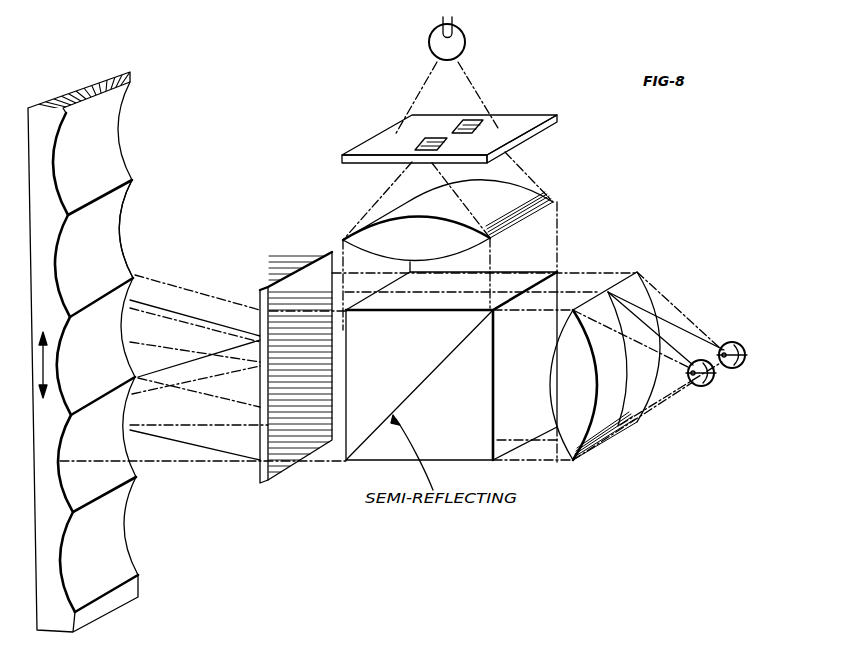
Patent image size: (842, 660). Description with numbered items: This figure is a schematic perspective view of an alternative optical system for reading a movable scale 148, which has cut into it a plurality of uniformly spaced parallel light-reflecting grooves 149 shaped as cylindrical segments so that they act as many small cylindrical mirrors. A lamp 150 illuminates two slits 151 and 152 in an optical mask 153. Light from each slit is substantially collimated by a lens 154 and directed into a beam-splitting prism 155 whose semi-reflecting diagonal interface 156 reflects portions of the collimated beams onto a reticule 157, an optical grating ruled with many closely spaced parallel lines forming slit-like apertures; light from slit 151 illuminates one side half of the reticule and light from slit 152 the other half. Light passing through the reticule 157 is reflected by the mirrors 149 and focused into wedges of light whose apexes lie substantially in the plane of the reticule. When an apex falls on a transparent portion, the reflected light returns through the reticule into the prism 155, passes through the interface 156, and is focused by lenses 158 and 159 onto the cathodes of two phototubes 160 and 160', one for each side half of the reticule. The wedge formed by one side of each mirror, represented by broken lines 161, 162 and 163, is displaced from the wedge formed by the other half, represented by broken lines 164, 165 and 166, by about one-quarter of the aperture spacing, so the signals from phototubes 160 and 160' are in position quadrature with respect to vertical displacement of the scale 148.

The scale 148 is at (67, 85).
The light-reflecting grooves 149 is at (118, 246).
The lamp 150 is at (430, 42).
The slit 151 is at (418, 147).
The slit 152 is at (466, 123).
The optical mask 153 is at (545, 95).
The lens 154 is at (520, 218).
The beam-splitting prism 155 is at (372, 460).
The semi-reflecting diagonal interface 156 is at (422, 380).
The reticule 157 is at (282, 470).
The lens 158 is at (590, 457).
The lens 159 is at (618, 432).
The phototube 160 is at (701, 388).
The phototube 160' is at (747, 364).
The broken line 161 is at (133, 345).
The broken line 162 is at (199, 320).
The broken line 163 is at (148, 398).
The broken line 164 is at (196, 313).
The broken line 165 is at (225, 292).
The broken line 166 is at (193, 368).